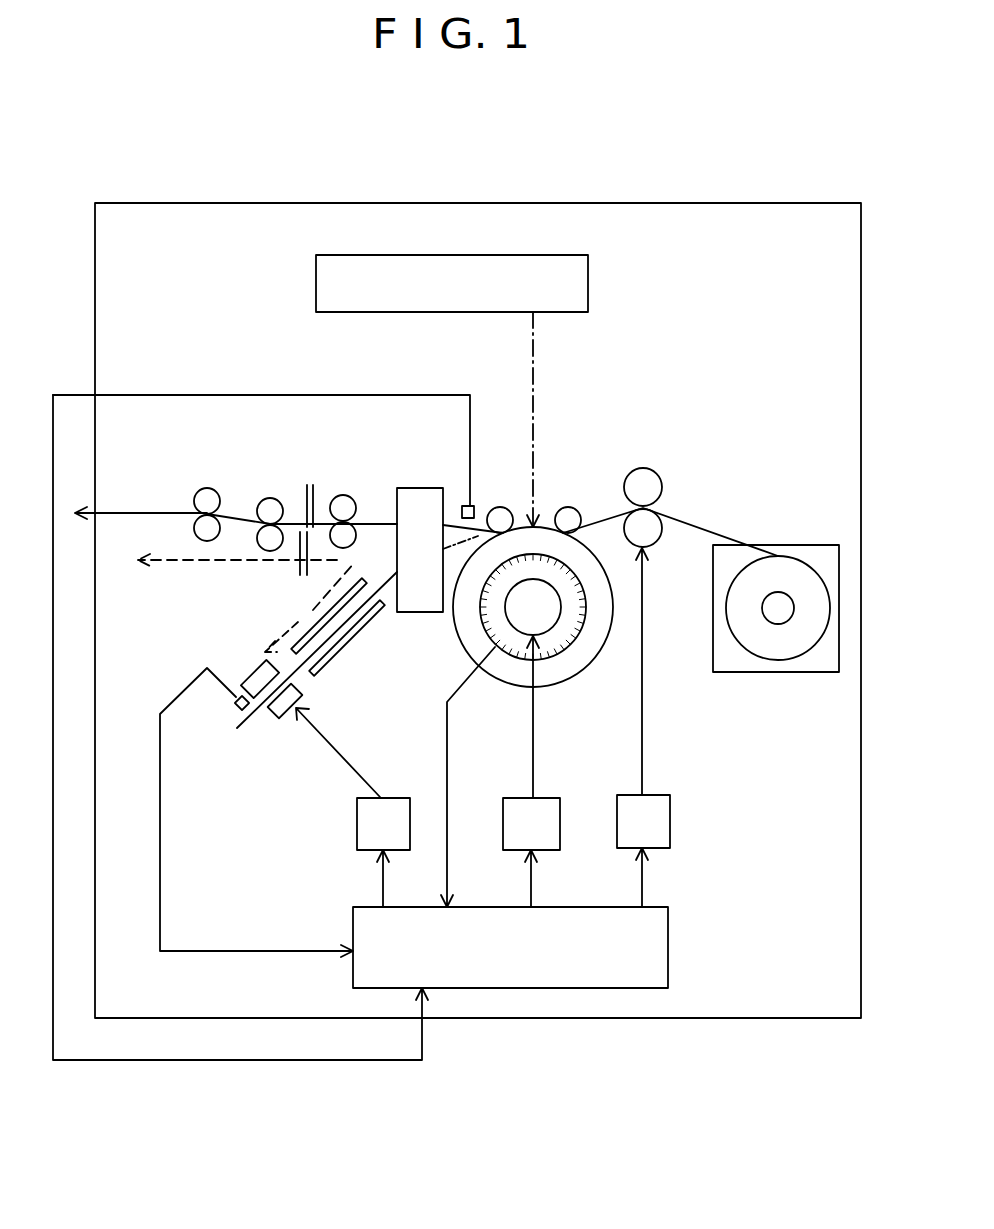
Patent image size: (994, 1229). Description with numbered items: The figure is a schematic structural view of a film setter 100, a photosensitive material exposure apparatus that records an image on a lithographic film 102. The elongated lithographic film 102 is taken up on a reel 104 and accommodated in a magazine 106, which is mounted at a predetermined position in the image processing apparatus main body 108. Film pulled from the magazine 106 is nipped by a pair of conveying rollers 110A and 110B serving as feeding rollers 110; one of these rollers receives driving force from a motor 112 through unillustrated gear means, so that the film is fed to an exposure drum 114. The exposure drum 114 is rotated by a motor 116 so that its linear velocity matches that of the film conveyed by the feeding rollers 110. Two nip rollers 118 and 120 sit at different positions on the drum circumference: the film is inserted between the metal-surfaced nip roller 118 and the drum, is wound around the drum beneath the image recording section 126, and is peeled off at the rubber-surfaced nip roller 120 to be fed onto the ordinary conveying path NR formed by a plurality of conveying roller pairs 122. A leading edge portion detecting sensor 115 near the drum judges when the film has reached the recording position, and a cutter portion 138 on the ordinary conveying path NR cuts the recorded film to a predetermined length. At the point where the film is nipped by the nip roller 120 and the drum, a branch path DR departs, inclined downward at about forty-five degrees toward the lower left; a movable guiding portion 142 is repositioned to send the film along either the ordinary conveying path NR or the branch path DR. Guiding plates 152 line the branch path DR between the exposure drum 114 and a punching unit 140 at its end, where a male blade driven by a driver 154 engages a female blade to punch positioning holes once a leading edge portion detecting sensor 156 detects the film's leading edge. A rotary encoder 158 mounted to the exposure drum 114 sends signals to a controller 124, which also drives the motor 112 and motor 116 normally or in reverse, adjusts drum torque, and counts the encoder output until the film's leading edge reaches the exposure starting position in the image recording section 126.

The film setter 100 is at (665, 364).
The lithographic film 102 is at (708, 528).
The reel 104 is at (780, 613).
The magazine 106 is at (805, 545).
The image processing apparatus main body 108 is at (685, 203).
The feeding rollers 110 is at (677, 491).
The conveying roller 110A is at (650, 485).
The conveying roller 110B is at (652, 536).
The motor 112 is at (670, 822).
The exposure drum 114 is at (533, 662).
The leading edge portion detecting sensor 115 is at (462, 506).
The motor 116 is at (505, 798).
The nip roller 118 is at (570, 507).
The nip roller 120 is at (500, 507).
The conveying roller pairs 122 is at (264, 499).
The controller 124 is at (668, 942).
The image recording section 126 is at (590, 266).
The cutter portion 138 is at (308, 485).
The punching unit 140 is at (328, 709).
The movable guiding portion 142 is at (432, 612).
The guiding plates 152 is at (322, 622).
The driver 154 is at (357, 822).
The leading edge portion detecting sensor 156 is at (235, 710).
The rotary encoder 158 is at (553, 665).
The ordinary conveying path NR is at (215, 562).
The branch path DR is at (298, 617).